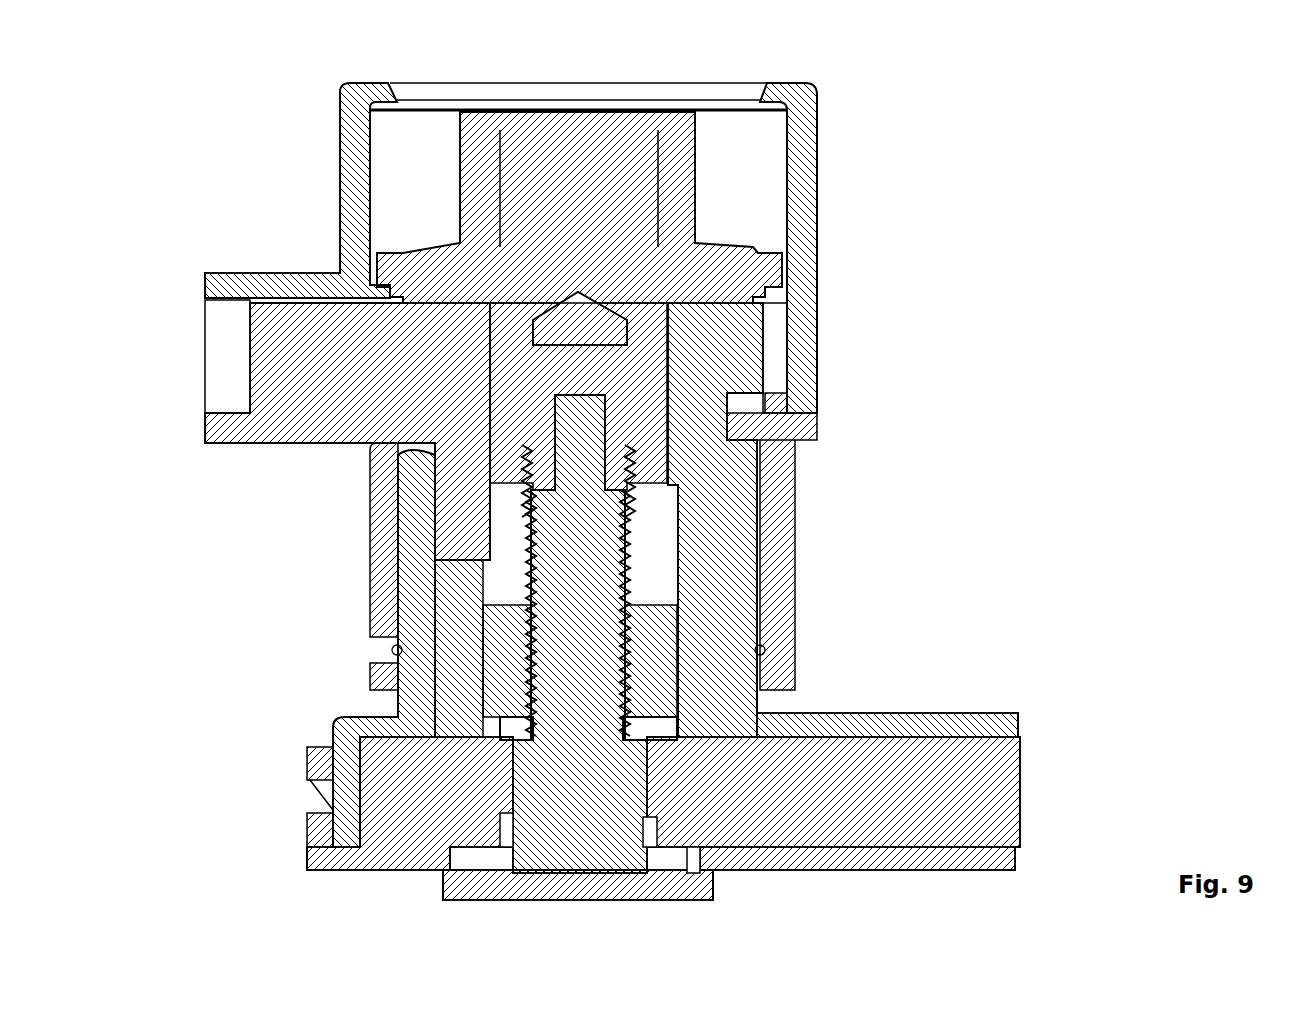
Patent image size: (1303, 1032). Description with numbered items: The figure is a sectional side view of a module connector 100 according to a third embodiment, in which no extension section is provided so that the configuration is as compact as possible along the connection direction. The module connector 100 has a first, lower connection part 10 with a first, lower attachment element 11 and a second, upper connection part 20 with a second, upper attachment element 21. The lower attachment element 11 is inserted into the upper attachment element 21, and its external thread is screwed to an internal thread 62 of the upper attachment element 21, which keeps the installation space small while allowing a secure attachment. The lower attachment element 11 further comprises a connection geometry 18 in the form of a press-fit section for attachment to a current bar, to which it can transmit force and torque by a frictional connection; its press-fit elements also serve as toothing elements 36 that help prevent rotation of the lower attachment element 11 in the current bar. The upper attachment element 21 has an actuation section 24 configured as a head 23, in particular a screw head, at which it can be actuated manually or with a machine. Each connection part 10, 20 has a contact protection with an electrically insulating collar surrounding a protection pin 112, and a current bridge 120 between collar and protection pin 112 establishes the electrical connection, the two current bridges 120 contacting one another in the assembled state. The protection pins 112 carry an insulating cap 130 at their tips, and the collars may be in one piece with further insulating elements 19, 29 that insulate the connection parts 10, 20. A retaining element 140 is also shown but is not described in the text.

The module connector 100 is at (960, 68).
The second, upper connection part 20 is at (322, 74).
The insulating element 29 is at (314, 184).
The second, upper attachment element 21 is at (642, 218).
The head 23 is at (588, 193).
The actuation section 24 is at (588, 193).
The insulating cap 130 is at (575, 376).
The internal thread 62 is at (642, 437).
The current bridge 120 is at (697, 511).
The protection pin 112 is at (519, 458).
The first, lower attachment element 11 is at (622, 606).
The connection geometry 18 is at (630, 818).
The toothing element 36 is at (660, 830).
The insulating element 19 is at (918, 874).
The retaining ring 140 is at (383, 803).
The first, lower connection part 10 is at (326, 706).